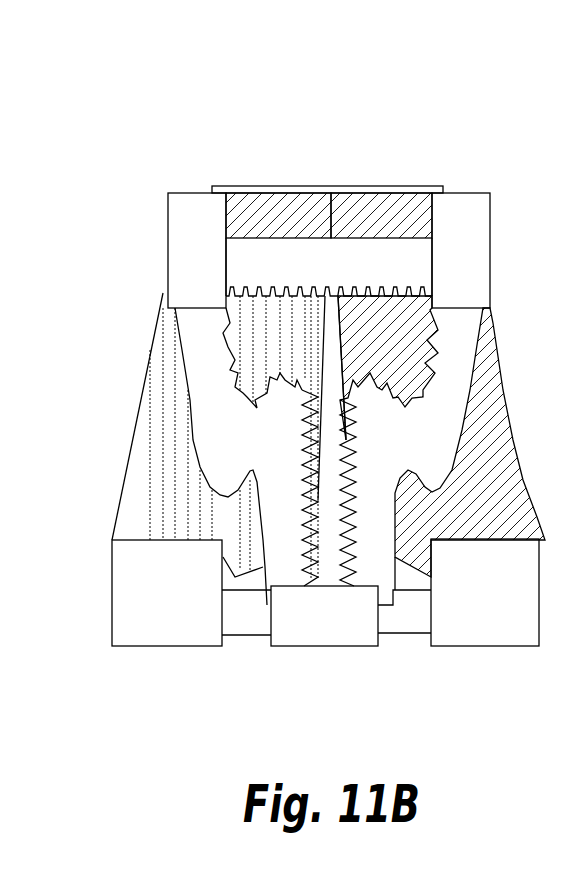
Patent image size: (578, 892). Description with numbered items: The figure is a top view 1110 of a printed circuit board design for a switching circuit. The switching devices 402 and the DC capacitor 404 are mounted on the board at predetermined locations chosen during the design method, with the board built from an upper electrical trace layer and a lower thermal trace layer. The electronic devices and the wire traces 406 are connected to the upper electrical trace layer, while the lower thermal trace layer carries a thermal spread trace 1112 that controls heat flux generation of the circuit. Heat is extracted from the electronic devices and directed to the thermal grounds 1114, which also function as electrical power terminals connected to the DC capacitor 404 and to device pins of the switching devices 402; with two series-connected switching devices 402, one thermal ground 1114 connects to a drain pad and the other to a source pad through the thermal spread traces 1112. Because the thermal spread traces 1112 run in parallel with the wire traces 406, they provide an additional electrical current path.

The top view 1110 is at (138, 114).
The switching devices 402 is at (187, 207).
The thermal spread trace 1112 is at (356, 191).
The wire traces 406 is at (426, 441).
The DC capacitor 404 is at (335, 634).
The thermal grounds 1114 is at (124, 628).